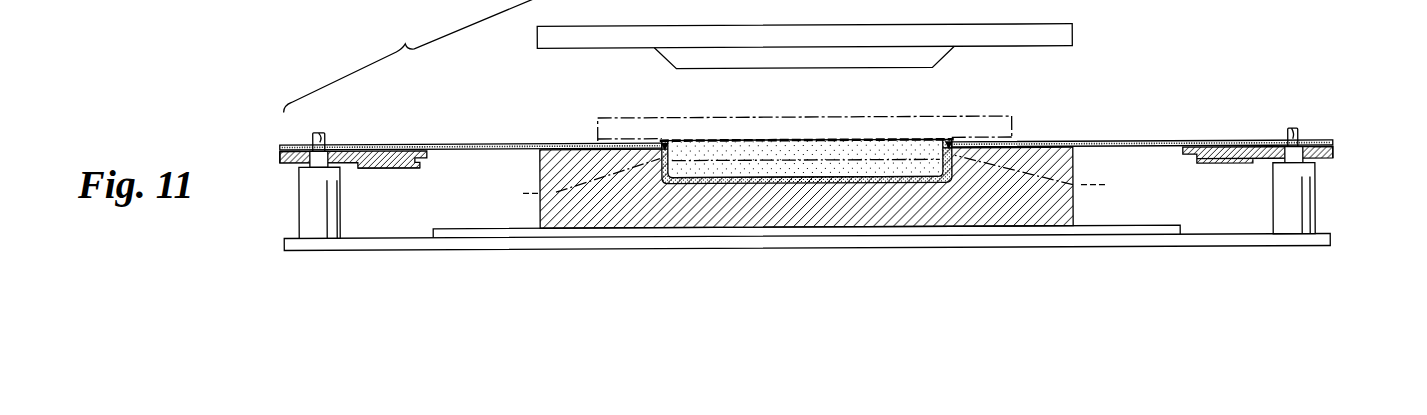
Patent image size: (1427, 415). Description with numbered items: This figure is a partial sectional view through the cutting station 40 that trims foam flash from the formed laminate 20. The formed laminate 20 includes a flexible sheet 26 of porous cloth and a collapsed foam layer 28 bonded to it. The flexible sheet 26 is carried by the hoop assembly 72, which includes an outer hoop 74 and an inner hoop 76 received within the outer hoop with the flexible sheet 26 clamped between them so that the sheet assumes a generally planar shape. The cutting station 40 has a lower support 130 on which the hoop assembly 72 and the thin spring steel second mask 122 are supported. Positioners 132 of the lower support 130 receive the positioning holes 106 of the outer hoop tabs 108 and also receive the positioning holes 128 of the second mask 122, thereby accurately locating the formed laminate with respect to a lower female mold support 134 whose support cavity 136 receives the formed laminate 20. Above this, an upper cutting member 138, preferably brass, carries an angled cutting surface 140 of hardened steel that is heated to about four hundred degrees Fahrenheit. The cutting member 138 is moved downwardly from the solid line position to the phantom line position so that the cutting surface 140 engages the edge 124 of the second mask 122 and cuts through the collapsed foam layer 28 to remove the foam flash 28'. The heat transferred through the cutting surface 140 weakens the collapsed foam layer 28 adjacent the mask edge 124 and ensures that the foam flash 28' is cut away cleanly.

The formed laminate 20 is at (773, 192).
The flexible sheet 26 is at (709, 182).
The collapsed foam layer 28 is at (807, 216).
The foam flash 28' is at (790, 112).
The cutting station 40 is at (1262, 32).
The hoop assembly 72 is at (270, 151).
The outer hoop 74 is at (412, 152).
The inner hoop 76 is at (423, 166).
The positioning holes 106 is at (318, 166).
The outer hoop tabs 108 is at (280, 152).
The second mask 122 is at (509, 141).
The edge 124 is at (665, 142).
The positioning holes 128 is at (319, 132).
The lower support 130 is at (286, 232).
The positioners 132 is at (338, 213).
The lower female mold support 134 is at (978, 200).
The support cavity 136 is at (847, 173).
The upper cutting member 138 is at (1064, 37).
The angled cutting surface 140 is at (658, 56).